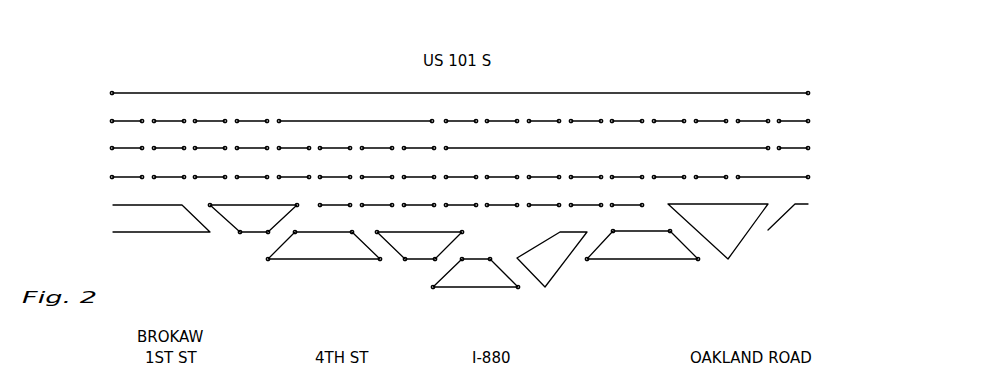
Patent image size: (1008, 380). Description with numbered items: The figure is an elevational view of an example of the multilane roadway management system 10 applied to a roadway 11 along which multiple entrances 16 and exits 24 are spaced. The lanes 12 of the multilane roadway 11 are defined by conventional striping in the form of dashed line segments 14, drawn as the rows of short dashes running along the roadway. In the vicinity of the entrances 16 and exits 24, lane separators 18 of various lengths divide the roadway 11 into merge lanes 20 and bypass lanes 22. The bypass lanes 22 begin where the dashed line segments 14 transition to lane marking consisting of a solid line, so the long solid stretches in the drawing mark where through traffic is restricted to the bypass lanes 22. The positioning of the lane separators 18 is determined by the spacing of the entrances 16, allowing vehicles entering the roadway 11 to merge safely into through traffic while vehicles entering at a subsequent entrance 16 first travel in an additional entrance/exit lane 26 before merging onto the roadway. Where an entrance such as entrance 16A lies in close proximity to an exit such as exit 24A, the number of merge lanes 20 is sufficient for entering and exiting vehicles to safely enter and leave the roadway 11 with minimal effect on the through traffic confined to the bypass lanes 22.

The multilane roadway management system 10 is at (138, 78).
The roadway 11 is at (268, 93).
The lanes 12 is at (118, 193).
The dashed line segments 14 is at (165, 123).
The entrances 16 is at (273, 240).
The entrance 16A is at (437, 263).
The lane separators 18 is at (376, 121).
The merge lanes 20 is at (459, 164).
The bypass lanes 22 is at (543, 140).
The exits 24 is at (220, 222).
The exit 24A is at (523, 278).
The additional entrance/exit lane 26 is at (476, 217).